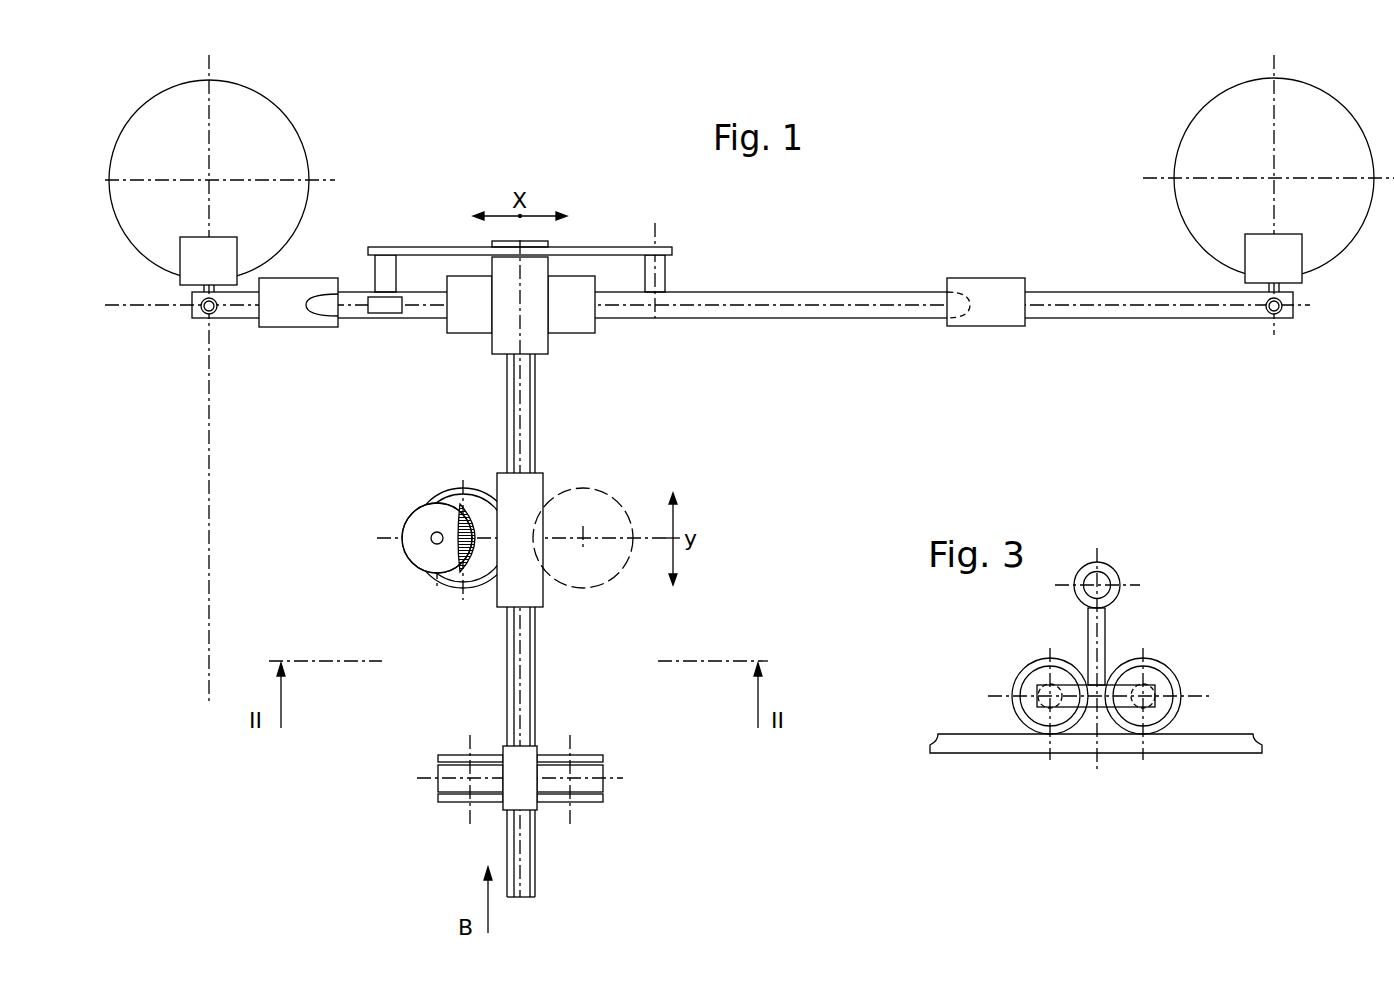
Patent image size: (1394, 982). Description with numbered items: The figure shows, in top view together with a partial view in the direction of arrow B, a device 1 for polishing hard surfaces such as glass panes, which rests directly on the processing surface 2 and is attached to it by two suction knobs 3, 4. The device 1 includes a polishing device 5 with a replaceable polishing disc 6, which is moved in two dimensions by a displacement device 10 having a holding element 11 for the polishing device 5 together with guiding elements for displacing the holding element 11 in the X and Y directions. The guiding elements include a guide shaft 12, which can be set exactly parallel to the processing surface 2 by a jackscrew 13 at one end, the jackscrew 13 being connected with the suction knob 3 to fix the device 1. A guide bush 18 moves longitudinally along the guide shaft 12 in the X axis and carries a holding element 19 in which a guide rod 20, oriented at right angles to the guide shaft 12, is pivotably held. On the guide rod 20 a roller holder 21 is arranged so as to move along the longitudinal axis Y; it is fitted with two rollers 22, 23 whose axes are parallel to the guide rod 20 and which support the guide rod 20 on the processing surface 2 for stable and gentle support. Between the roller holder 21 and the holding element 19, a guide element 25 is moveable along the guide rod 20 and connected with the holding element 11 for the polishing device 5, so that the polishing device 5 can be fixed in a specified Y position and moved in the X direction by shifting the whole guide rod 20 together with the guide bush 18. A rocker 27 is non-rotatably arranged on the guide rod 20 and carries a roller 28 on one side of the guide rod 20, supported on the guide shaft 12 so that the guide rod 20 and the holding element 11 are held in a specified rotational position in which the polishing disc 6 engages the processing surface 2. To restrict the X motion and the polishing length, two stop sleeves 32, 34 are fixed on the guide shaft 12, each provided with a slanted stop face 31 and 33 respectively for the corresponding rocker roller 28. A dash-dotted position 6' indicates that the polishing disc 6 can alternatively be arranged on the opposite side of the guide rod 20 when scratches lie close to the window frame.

In FIG. 1, the device 1 is at (822, 260).
In FIG. 3, the processing surface 2 is at (972, 737).
In FIG. 1, the suction knob 3 is at (258, 110).
In FIG. 1, the suction knob 4 is at (1315, 108).
In FIG. 1, the polishing device 5 is at (406, 566).
In FIG. 1, the polishing disc 6 is at (462, 513).
In FIG. 1, the position of the polishing disc 6' is at (583, 555).
In FIG. 1, the displacement device 10 is at (602, 339).
In FIG. 1, the holding element 11 is at (485, 563).
In FIG. 1, the guide shaft 12 is at (898, 314).
In FIG. 1, the jackscrew 13 is at (200, 322).
In FIG. 1, the guide bush 18 is at (571, 323).
In FIG. 1, the holding element 19 is at (500, 342).
In FIG. 1, the guide rod 20 is at (537, 643).
In FIG. 1, the roller holder 21 is at (530, 800).
In FIG. 3, the roller holder 21 is at (1118, 573).
In FIG. 1, the roller 22 is at (450, 785).
In FIG. 3, the roller 22 is at (1025, 665).
In FIG. 1, the roller 23 is at (590, 785).
In FIG. 3, the roller 23 is at (1168, 665).
In FIG. 1, the guide element 25 is at (537, 483).
In FIG. 1, the rocker 27 is at (580, 250).
In FIG. 1, the roller 28 is at (377, 308).
In FIG. 1, the stop face 31 is at (327, 297).
In FIG. 1, the stop sleeve 32 is at (287, 320).
In FIG. 1, the stop face 33 is at (957, 297).
In FIG. 1, the stop sleeve 34 is at (987, 320).